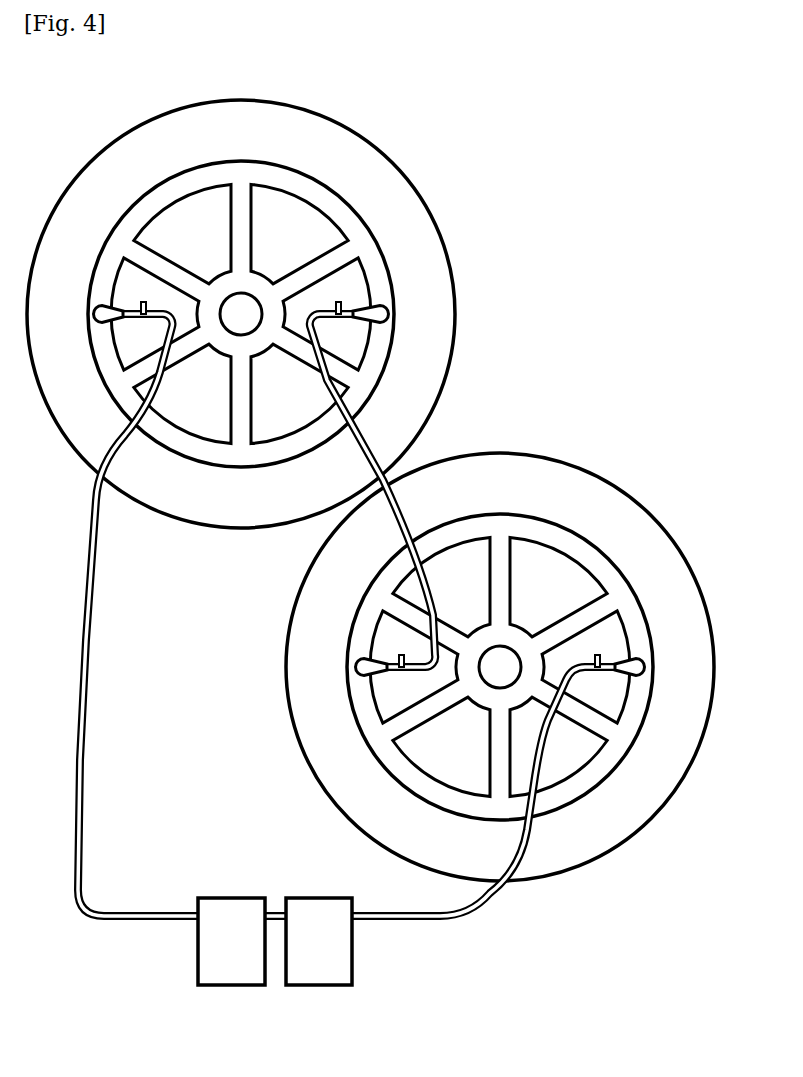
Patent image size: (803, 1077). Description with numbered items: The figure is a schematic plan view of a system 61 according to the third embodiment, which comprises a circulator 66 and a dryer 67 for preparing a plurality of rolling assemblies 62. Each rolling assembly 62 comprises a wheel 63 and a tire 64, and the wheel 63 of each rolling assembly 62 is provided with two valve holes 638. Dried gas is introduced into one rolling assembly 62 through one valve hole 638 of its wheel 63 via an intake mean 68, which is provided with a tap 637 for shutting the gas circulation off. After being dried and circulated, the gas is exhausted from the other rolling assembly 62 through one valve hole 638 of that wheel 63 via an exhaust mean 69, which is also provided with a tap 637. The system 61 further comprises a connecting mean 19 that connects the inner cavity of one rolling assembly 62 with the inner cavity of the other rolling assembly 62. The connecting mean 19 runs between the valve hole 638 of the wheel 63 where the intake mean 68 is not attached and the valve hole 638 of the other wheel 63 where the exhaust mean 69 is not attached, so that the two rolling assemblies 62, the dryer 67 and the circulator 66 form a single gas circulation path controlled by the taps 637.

The connecting mean 19 is at (372, 492).
The system 61 is at (233, 722).
The rolling assembly 62 is at (554, 424).
The wheel 63 is at (352, 228).
The tire 64 is at (365, 170).
The circulator 66 is at (312, 913).
The dryer 67 is at (227, 913).
The intake mean 68 is at (85, 677).
The exhaust mean 69 is at (470, 905).
The tap 637 is at (141, 305).
The valve hole 638 is at (93, 311).